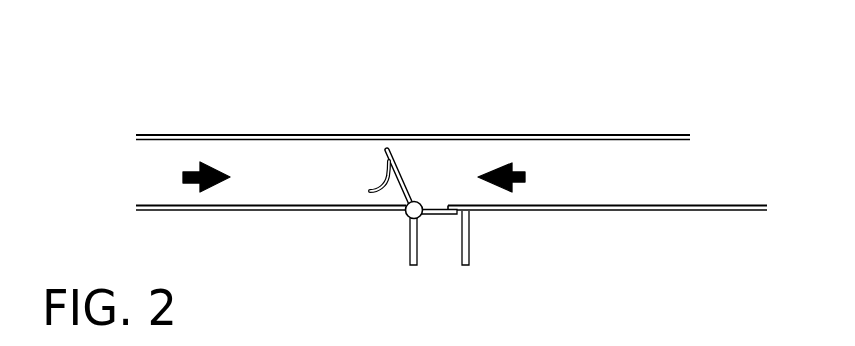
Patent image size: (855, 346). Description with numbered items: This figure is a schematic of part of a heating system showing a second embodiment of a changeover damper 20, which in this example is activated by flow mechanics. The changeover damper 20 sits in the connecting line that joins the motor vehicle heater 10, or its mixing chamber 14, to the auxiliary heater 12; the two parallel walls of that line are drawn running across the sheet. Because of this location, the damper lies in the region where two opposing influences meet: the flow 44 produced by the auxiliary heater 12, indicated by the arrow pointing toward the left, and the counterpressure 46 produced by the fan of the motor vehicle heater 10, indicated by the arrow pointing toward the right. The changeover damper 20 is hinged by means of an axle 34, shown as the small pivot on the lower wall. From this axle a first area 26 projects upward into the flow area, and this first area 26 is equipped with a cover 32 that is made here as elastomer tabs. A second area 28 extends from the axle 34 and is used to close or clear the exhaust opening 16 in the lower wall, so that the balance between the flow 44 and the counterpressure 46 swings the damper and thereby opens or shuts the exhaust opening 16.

The motor vehicle heater 10 is at (383, 162).
The mixing chamber 14 is at (259, 187).
The auxiliary heater 12 is at (594, 186).
The exhaust opening 16 is at (455, 252).
The changeover damper 20 is at (403, 174).
The first area 26 is at (392, 166).
The second area 28 is at (442, 216).
The cover 32 is at (371, 194).
The axle 34 is at (406, 217).
The flow 44 is at (517, 168).
The counterpressure 46 is at (205, 163).